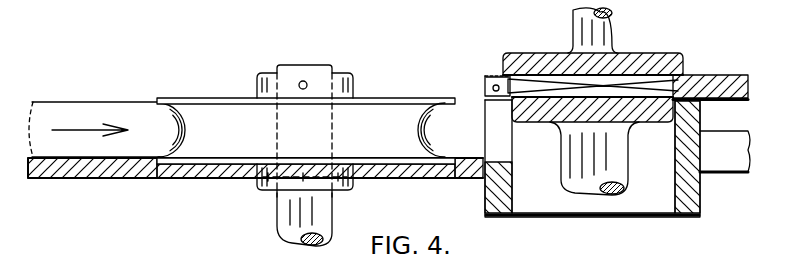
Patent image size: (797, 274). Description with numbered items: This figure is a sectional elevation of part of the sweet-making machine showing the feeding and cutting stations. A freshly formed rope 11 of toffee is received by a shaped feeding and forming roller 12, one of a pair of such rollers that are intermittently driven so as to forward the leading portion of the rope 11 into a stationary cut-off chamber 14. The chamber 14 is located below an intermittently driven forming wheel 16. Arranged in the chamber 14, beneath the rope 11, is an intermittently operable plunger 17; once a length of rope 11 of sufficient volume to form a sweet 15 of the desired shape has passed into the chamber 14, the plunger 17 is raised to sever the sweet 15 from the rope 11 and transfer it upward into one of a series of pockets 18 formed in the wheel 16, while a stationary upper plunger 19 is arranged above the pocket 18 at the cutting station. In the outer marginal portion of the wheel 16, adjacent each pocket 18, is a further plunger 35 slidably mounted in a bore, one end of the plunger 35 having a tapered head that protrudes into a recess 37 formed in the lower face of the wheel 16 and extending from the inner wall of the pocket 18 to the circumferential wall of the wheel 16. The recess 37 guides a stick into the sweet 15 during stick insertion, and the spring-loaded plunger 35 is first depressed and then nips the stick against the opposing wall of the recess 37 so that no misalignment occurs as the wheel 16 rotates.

The rope 11 is at (105, 112).
The feeding and forming roller 12 is at (220, 110).
The cut-off chamber 14 is at (543, 158).
The sweet 15 is at (655, 90).
The forming wheel 16 is at (702, 90).
The plunger 17 is at (655, 110).
The pocket 18 is at (520, 78).
The upper plunger 19 is at (623, 65).
The plunger 35 is at (484, 81).
The recess 37 is at (493, 77).